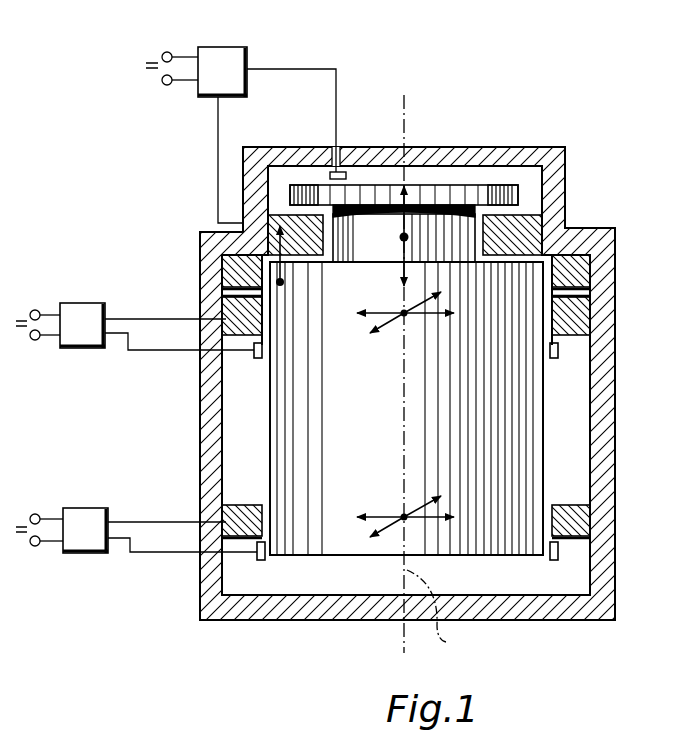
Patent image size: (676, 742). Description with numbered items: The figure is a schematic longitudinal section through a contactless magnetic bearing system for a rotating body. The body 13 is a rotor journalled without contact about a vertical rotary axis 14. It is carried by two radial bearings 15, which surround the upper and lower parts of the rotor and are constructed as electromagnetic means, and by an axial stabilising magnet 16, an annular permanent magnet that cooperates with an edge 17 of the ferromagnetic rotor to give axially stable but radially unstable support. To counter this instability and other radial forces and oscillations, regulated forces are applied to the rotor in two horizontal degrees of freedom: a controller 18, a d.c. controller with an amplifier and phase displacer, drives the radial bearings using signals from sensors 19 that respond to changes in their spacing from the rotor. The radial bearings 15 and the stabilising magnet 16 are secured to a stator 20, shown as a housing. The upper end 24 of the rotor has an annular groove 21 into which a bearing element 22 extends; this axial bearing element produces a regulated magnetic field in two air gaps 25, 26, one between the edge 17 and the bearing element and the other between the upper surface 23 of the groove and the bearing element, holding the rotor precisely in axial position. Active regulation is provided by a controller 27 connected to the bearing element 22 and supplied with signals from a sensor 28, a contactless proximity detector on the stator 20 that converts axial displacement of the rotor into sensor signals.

The body 13 is at (322, 544).
The vertical rotary axis 14 is at (444, 614).
The radial bearings 15 is at (576, 322).
The axial stabilising magnet 16 is at (580, 271).
The edge 17 is at (318, 264).
The controller 18 is at (79, 336).
The sensors 19 is at (254, 351).
The stator 20 is at (604, 578).
The annular groove 21 is at (481, 197).
The bearing element 22 is at (544, 226).
The upper surface of the groove 23 is at (528, 208).
The upper end of the rotor 24 is at (431, 192).
The air gap 25 is at (298, 200).
The air gap 26 is at (334, 264).
The controller 27 is at (222, 58).
The sensor 28 is at (349, 176).